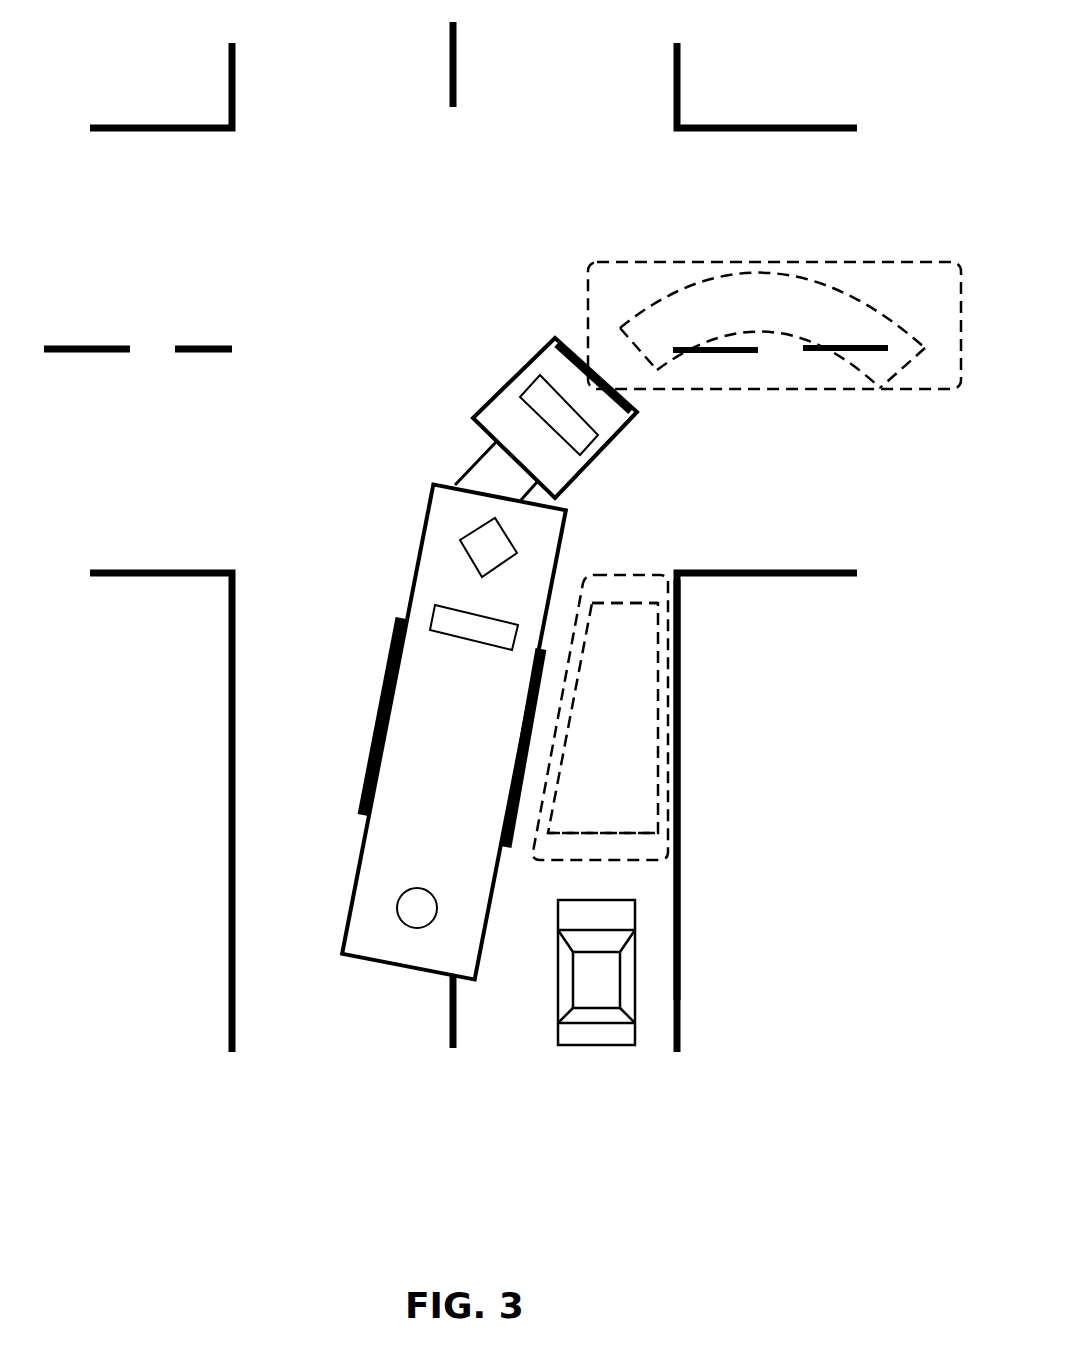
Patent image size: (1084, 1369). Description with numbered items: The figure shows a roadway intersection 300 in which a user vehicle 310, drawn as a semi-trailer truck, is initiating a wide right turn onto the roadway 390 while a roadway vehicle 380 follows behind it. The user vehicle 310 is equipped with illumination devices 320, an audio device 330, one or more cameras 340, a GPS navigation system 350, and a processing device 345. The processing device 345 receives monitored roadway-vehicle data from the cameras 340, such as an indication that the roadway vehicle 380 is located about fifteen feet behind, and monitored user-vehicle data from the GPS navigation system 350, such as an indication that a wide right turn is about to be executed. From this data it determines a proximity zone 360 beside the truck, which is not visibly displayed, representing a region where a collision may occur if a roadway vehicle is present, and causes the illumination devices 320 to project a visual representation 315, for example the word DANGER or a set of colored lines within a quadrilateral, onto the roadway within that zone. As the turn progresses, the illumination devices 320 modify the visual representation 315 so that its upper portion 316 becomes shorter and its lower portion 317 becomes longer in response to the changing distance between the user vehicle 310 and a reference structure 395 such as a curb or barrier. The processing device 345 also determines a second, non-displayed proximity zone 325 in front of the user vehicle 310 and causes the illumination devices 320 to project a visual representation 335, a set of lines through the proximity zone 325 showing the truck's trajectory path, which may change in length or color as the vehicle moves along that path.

The roadway intersection 300 is at (762, 60).
The user vehicle 310 is at (445, 424).
The visual representation 315 is at (630, 729).
The upper portion 316 is at (617, 605).
The lower portion 317 is at (582, 833).
The illumination devices 320 is at (570, 337).
The proximity zone 325 is at (637, 264).
The audio device 330 is at (431, 894).
The visual representation 335 is at (790, 272).
The cameras 340 is at (530, 389).
The processing device 345 is at (470, 533).
The GPS navigation system 350 is at (440, 617).
The proximity zone 360 is at (617, 577).
The roadway vehicle 380 is at (637, 1003).
The roadway 390 is at (806, 482).
The reference structure 395 is at (680, 607).